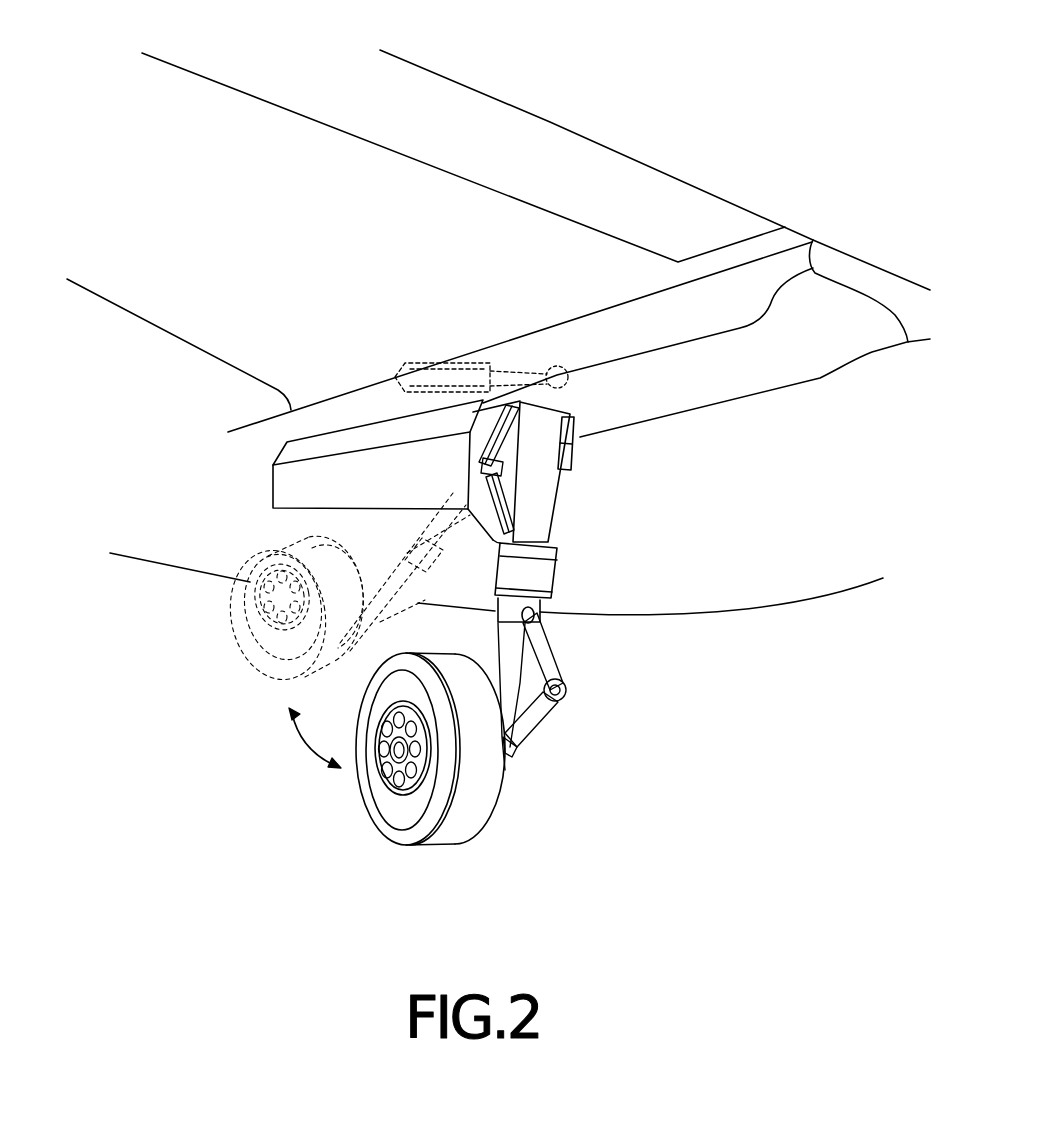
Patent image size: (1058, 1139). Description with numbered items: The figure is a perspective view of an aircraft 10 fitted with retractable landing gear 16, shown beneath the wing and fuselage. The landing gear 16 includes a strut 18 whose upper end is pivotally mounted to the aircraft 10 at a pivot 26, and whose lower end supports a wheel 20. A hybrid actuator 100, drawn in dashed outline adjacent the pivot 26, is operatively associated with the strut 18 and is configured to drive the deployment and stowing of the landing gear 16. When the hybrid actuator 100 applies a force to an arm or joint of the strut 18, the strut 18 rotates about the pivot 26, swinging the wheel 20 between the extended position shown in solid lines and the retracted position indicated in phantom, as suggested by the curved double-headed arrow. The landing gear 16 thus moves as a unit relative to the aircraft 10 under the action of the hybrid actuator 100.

The aircraft 10 is at (814, 566).
The landing gear 16 is at (531, 644).
The strut 18 is at (548, 518).
The wheel 20 is at (410, 790).
The pivot 26 is at (560, 388).
The hybrid actuator 100 is at (439, 362).